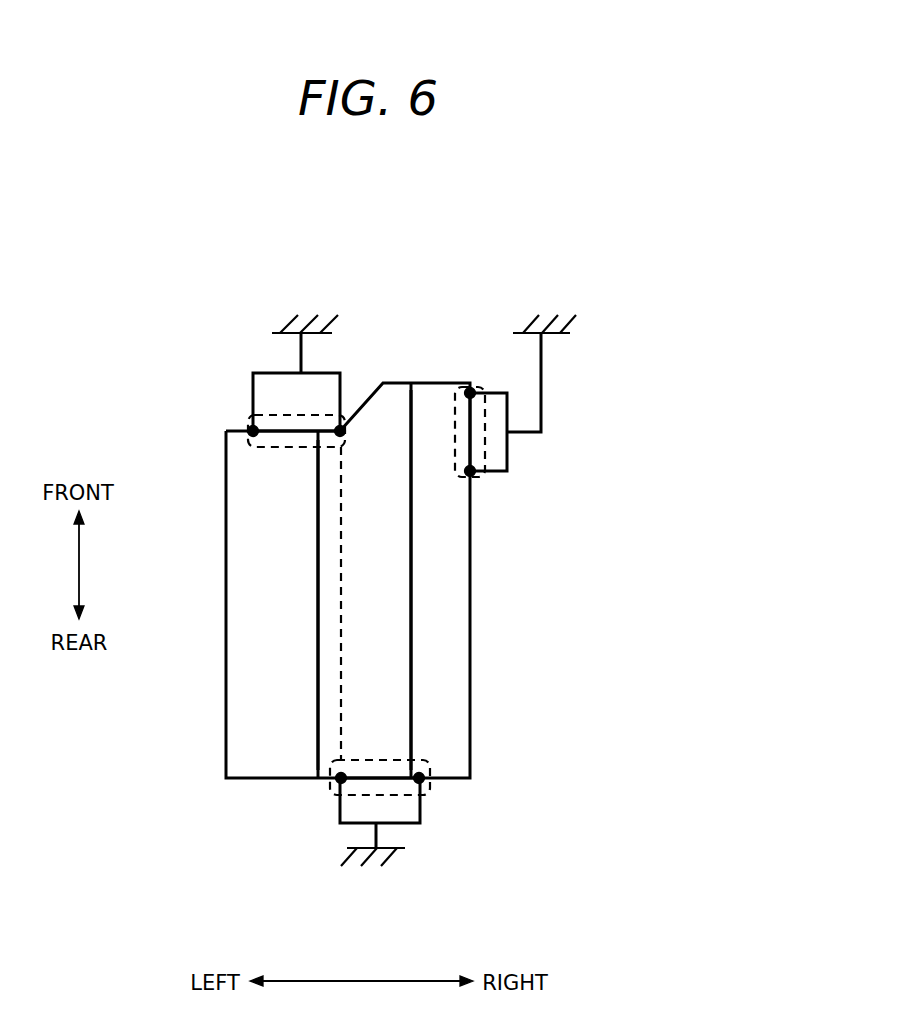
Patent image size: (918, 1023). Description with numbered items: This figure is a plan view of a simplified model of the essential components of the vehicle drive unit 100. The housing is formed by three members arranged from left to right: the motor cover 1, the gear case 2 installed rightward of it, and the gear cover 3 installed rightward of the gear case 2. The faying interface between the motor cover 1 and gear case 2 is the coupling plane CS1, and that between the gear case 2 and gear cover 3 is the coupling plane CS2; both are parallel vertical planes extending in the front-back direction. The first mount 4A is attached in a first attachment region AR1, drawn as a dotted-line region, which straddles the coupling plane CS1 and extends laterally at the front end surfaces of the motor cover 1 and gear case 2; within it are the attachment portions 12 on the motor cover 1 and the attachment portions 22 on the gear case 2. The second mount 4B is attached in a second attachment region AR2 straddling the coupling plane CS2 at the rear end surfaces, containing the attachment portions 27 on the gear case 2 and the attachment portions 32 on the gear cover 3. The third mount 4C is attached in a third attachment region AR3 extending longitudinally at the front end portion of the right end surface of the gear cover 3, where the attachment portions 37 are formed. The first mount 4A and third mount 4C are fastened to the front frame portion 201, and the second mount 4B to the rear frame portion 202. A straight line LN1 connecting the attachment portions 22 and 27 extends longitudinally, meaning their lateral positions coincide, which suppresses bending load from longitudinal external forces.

The vehicle drive unit 100 is at (607, 263).
The front frame portion 201 is at (543, 318).
The rear frame portion 202 is at (374, 862).
The motor cover 1 is at (255, 668).
The gear case 2 is at (390, 670).
The gear cover 3 is at (447, 687).
The first mount 4A is at (253, 393).
The second mount 4B is at (420, 805).
The third mount 4C is at (507, 450).
The attachment portion 12 is at (248, 436).
The attachment portion 22 is at (345, 425).
The attachment portion 27 is at (336, 783).
The attachment portion 32 is at (421, 776).
The attachment portion 37 is at (464, 470).
The first attachment region AR1 is at (245, 428).
The second attachment region AR2 is at (428, 790).
The third attachment region AR3 is at (485, 455).
The coupling plane CS1 is at (318, 548).
The coupling plane CS2 is at (411, 593).
The straight line LN1 is at (341, 604).